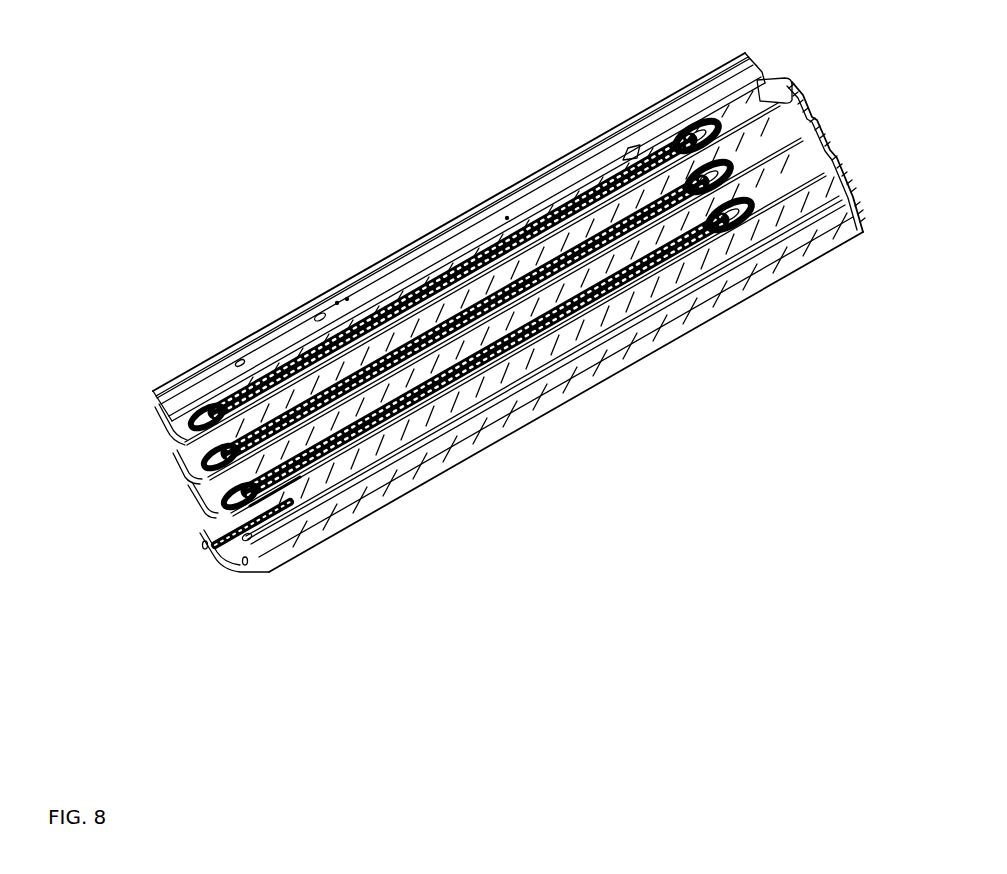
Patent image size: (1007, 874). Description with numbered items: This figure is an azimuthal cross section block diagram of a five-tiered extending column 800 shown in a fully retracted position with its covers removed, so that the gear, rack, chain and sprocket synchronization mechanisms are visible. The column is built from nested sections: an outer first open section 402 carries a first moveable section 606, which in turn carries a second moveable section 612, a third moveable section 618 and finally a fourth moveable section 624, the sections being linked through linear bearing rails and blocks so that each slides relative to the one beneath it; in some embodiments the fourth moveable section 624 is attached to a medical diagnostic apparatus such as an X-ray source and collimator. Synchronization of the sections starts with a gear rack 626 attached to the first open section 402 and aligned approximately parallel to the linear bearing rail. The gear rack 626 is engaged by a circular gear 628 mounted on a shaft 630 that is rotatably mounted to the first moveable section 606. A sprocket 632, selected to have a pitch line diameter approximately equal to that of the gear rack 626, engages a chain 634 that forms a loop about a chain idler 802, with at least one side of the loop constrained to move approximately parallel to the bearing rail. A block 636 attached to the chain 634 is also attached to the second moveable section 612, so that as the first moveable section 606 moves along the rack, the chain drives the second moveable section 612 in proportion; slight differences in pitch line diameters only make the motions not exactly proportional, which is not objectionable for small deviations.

The five-tiered extending column 800 is at (455, 437).
The first open section 402 is at (452, 356).
The first moveable section 606 is at (436, 415).
The second moveable section 612 is at (420, 331).
The third moveable section 618 is at (190, 447).
The fourth moveable section 624 is at (177, 405).
The gear rack 626 is at (212, 533).
The circular gear 628 is at (248, 538).
The shaft 630 is at (210, 495).
The sprocket 632 is at (285, 480).
The chain 634 is at (285, 494).
The block 636 is at (255, 456).
The chain idler 802 is at (718, 228).